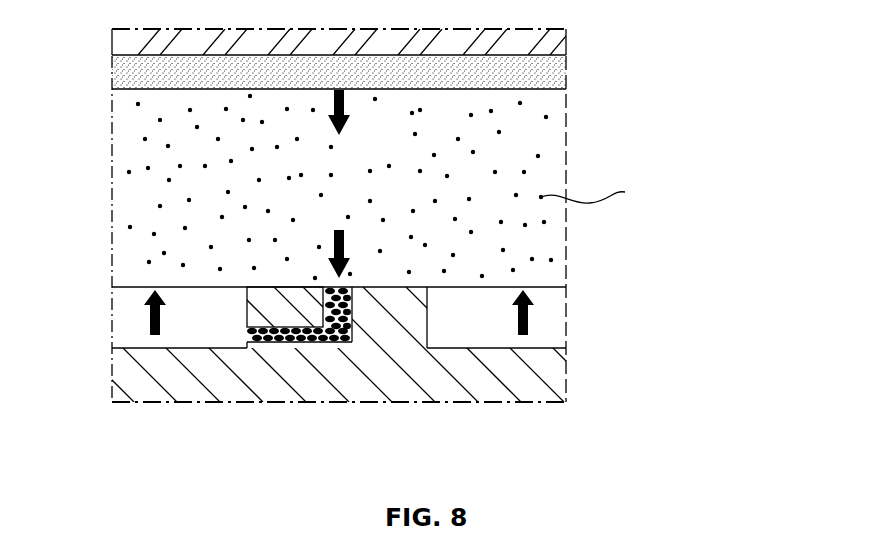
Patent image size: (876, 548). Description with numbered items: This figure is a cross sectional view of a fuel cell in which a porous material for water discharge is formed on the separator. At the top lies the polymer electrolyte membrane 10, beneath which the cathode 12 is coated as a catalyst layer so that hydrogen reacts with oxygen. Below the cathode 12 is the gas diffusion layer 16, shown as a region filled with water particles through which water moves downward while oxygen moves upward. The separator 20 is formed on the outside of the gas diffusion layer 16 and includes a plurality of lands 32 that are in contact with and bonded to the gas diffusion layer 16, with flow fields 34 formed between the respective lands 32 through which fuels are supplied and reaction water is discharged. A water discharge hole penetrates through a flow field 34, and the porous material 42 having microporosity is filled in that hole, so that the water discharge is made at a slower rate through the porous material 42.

The polymer electrolyte membrane 10 is at (118, 42).
The cathode 12 is at (118, 70).
The gas diffusion layer 16 is at (108, 92).
The separator 20 is at (555, 378).
The lands 32 is at (380, 287).
The flow fields 34 is at (213, 330).
The porous material 42 is at (299, 342).